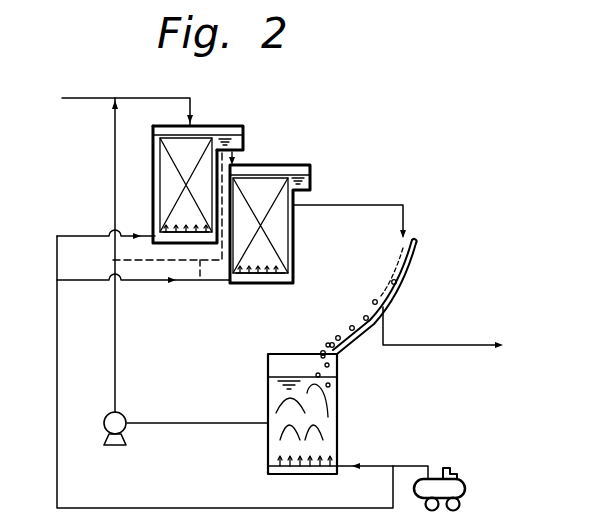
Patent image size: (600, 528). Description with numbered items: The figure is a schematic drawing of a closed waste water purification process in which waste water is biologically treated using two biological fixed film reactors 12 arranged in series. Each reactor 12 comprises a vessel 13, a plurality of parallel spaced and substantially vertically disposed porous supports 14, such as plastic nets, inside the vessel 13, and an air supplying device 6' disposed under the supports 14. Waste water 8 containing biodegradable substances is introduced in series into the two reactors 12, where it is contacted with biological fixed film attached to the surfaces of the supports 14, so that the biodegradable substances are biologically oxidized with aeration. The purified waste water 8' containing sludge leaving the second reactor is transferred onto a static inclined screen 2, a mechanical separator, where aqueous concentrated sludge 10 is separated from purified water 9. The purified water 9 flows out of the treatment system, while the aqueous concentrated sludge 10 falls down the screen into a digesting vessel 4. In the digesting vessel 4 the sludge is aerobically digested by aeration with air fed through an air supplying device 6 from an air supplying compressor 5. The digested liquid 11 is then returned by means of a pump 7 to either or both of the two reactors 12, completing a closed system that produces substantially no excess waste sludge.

The static inclined screen 2 is at (413, 255).
The digesting vessel 4 is at (338, 405).
The air supplying compressor 5 is at (467, 483).
The air supplying device 6 is at (348, 481).
The air supplying device 6' is at (216, 273).
The pump 7 is at (106, 417).
The waste water 8 is at (114, 107).
The purified waste water 8' is at (349, 200).
The purified water 9 is at (451, 331).
The aqueous concentrated sludge 10 is at (351, 326).
The digested liquid 11 is at (116, 353).
The biological fixed film reactor 12 is at (223, 126).
The vessel 13 is at (155, 206).
The porous supports 14 is at (173, 172).